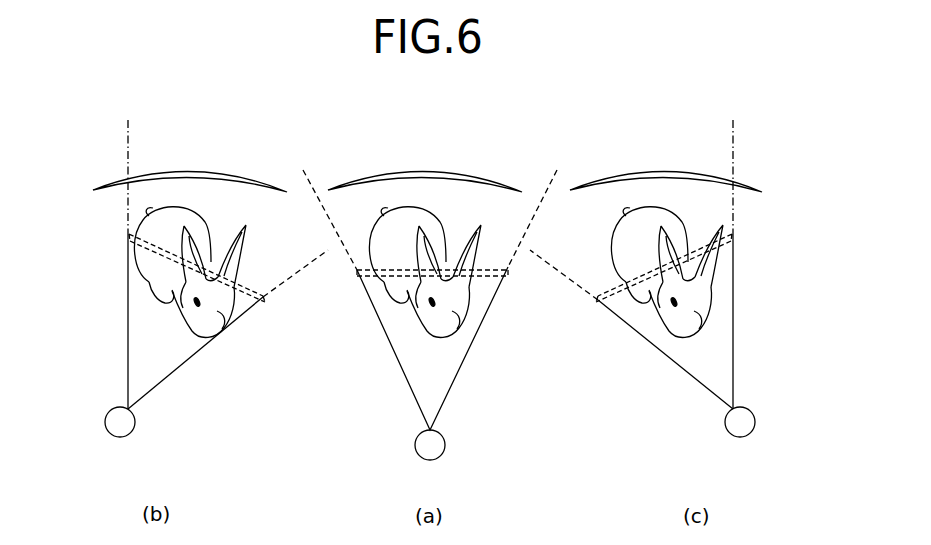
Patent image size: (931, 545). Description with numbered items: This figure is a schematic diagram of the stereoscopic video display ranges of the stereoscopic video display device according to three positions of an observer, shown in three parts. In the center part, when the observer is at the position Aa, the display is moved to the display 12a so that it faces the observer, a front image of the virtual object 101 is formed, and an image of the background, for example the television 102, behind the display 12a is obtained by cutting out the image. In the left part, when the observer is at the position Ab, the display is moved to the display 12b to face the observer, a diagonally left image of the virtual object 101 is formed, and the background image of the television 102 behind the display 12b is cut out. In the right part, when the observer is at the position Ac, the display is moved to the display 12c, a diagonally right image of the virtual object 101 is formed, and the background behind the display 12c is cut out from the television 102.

The virtual object 101 is at (450, 312).
The television 102 is at (188, 169).
The display 12a is at (512, 274).
The display 12b is at (735, 229).
The display 12c is at (127, 230).
The position Aa is at (445, 447).
The position Ab is at (135, 426).
The position Ac is at (755, 426).